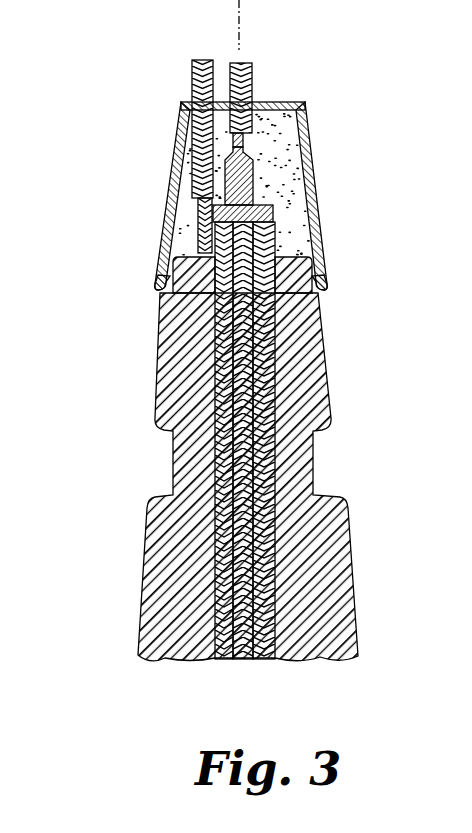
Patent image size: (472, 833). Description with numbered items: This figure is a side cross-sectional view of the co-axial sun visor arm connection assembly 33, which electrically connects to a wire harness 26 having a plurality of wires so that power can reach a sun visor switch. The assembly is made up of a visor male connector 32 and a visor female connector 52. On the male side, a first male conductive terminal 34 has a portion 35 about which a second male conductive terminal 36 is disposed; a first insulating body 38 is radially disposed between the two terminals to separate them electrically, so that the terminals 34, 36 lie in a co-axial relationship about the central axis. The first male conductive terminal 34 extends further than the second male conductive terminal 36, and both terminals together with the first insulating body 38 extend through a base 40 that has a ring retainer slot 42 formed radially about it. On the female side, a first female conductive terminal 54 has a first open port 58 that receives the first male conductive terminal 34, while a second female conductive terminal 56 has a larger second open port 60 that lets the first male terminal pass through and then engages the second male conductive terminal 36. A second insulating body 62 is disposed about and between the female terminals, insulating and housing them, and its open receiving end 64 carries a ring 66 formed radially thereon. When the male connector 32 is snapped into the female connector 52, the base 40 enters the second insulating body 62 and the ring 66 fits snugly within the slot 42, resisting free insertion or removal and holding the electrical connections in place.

The wire harness 26 is at (192, 70).
The visor male connector 32 is at (321, 317).
The co-axial sun visor arm connection assembly 33 is at (225, 202).
The first male conductive terminal 34 is at (247, 140).
The portion 35 is at (198, 212).
The second male conductive terminal 36 is at (214, 322).
The first insulating body 38 is at (273, 342).
The base 40 is at (203, 244).
The ring retainer slot 42 is at (274, 232).
The visor female connector 52 is at (319, 176).
The first female conductive terminal 54 is at (253, 74).
The second female conductive terminal 56 is at (181, 107).
The first open port 58 is at (254, 165).
The second open port 60 is at (256, 207).
The second insulating body 62 is at (322, 255).
The open receiving end 64 is at (167, 291).
The ring 66 is at (324, 284).